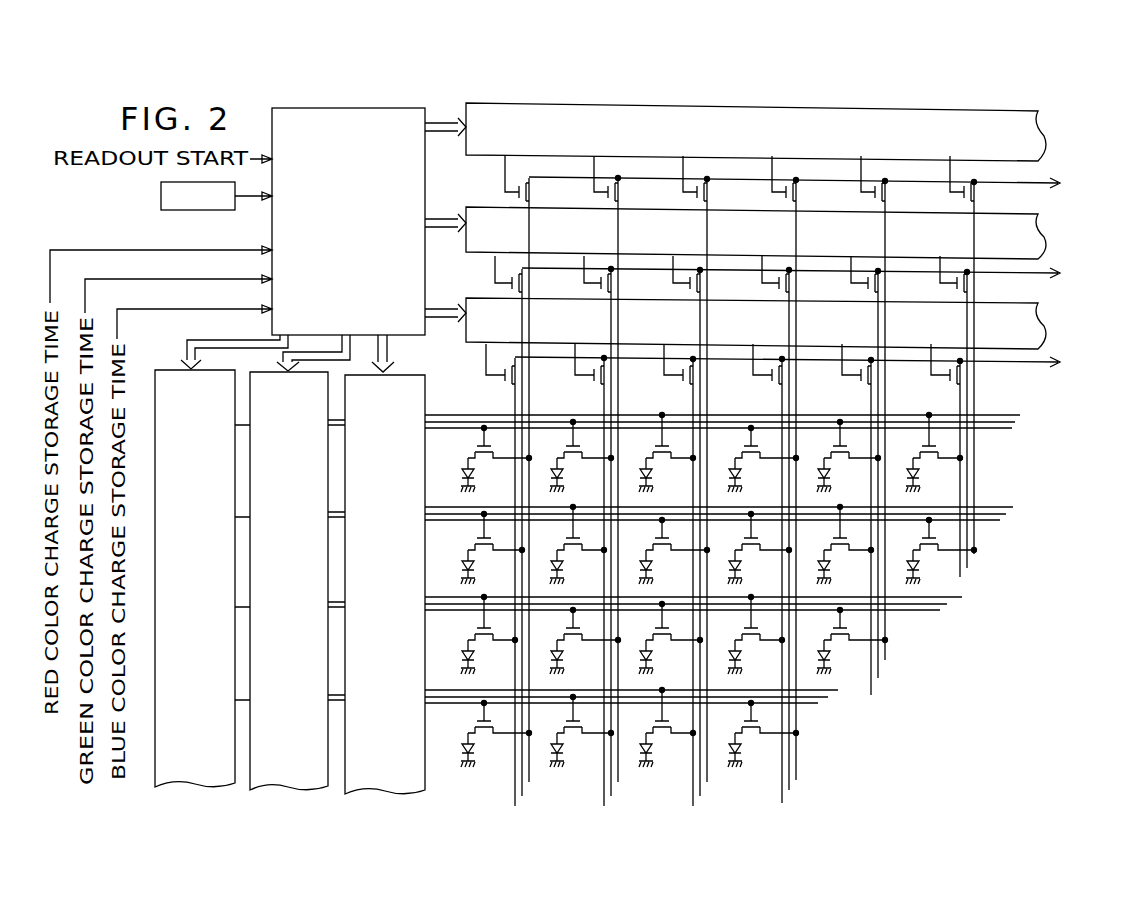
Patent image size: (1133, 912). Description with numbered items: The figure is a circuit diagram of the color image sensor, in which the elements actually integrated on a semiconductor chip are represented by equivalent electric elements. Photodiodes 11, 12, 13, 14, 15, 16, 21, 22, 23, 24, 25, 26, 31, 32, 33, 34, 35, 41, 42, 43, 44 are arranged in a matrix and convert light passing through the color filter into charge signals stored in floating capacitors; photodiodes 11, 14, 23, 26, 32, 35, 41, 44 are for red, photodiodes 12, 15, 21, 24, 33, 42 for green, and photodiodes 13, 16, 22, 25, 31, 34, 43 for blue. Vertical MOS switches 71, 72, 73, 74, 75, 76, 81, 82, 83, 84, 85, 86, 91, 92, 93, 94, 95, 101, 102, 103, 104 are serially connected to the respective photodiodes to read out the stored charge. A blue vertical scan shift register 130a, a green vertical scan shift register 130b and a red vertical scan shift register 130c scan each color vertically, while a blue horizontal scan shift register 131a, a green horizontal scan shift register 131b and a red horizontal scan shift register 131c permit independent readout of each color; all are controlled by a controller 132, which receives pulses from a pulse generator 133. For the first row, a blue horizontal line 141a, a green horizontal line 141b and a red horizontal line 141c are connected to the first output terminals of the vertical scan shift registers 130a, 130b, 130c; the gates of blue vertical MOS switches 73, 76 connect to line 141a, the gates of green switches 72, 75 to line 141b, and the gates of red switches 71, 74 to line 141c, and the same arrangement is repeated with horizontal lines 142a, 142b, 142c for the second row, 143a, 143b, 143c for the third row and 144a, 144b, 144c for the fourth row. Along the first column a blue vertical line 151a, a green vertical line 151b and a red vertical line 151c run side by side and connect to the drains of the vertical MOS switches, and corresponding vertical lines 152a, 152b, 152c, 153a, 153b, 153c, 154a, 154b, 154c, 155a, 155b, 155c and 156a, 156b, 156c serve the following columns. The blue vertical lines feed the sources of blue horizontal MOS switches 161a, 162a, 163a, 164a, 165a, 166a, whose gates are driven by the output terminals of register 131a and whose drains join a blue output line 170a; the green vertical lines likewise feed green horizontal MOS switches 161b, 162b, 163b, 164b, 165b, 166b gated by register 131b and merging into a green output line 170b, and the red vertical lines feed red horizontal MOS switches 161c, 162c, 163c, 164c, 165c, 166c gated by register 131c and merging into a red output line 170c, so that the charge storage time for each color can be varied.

The controller 132 is at (272, 225).
The pulse generator 133 is at (161, 194).
The blue vertical scan shift register 130a is at (391, 797).
The green vertical scan shift register 130b is at (296, 793).
The red vertical scan shift register 130c is at (196, 790).
The blue horizontal scan shift register 131a is at (1046, 318).
The green horizontal scan shift register 131b is at (1046, 228).
The red horizontal scan shift register 131c is at (1046, 128).
The blue horizontal line 141a is at (1020, 415).
The green horizontal line 141b is at (1015, 422).
The red horizontal line 141c is at (1012, 428).
The blue row select line (second row) 142a is at (1013, 507).
The green row select line (second row) 142b is at (1006, 514).
The red row select line (second row) 142c is at (1000, 520).
The blue row select line (third row) 143a is at (962, 597).
The green row select line (third row) 143b is at (947, 604).
The red row select line (third row) 143c is at (940, 610).
The blue row select line (fourth row) 144a is at (838, 690).
The green row select line (fourth row) 144b is at (828, 697).
The red row select line (fourth row) 144c is at (818, 703).
The blue vertical line 151a is at (515, 806).
The green vertical line 151b is at (522, 796).
The red vertical line 151c is at (529, 782).
The blue vertical line 152a is at (604, 806).
The green vertical line 152b is at (611, 796).
The red vertical line 152c is at (618, 782).
The blue vertical line 153a is at (693, 806).
The green vertical line 153b is at (700, 796).
The red vertical line 153c is at (707, 782).
The blue vertical line 154a is at (782, 803).
The green vertical line 154b is at (789, 790).
The red vertical line 154c is at (796, 779).
The blue vertical line 155a is at (873, 659).
The green vertical line 155b is at (879, 678).
The red vertical line 155c is at (871, 695).
The blue vertical line 156a is at (960, 577).
The green vertical line 156b is at (967, 568).
The red vertical line 156c is at (975, 553).
The blue horizontal MOS switch 161a is at (500, 377).
The blue horizontal MOS switch 162a is at (589, 377).
The blue horizontal MOS switch 163a is at (678, 377).
The blue horizontal MOS switch 164a is at (767, 377).
The blue horizontal MOS switch 165a is at (856, 377).
The blue horizontal MOS switch 166a is at (945, 377).
The green horizontal MOS switch 161b is at (497, 283).
The green horizontal MOS switch 162b is at (586, 283).
The green horizontal MOS switch 163b is at (675, 283).
The green horizontal MOS switch 164b is at (764, 283).
The green horizontal MOS switch 165b is at (853, 283).
The green horizontal MOS switch 166b is at (942, 283).
The red horizontal MOS switch 161c is at (504, 192).
The red horizontal MOS switch 162c is at (593, 192).
The red horizontal MOS switch 163c is at (682, 192).
The red horizontal MOS switch 164c is at (771, 192).
The red horizontal MOS switch 165c is at (860, 192).
The red horizontal MOS switch 166c is at (949, 192).
The blue output line 170a is at (1050, 361).
The green output line 170b is at (1050, 272).
The red output line 170c is at (1050, 182).
The photodiode 11 is at (472, 473).
The photodiode 12 is at (561, 473).
The photodiode 13 is at (650, 473).
The photodiode 14 is at (739, 473).
The photodiode 15 is at (828, 473).
The photodiode 16 is at (917, 473).
The photodiode 21 is at (472, 565).
The photodiode 22 is at (561, 565).
The photodiode 23 is at (650, 565).
The photodiode 24 is at (739, 565).
The photodiode 25 is at (828, 565).
The photodiode 26 is at (917, 565).
The photodiode 31 is at (472, 655).
The photodiode 32 is at (561, 655).
The photodiode 33 is at (650, 655).
The photodiode 34 is at (739, 655).
The photodiode 35 is at (828, 655).
The photodiode 41 is at (472, 748).
The photodiode 42 is at (561, 748).
The photodiode 43 is at (650, 748).
The photodiode 44 is at (739, 748).
The vertical MOS switch 71 is at (483, 445).
The vertical MOS switch 72 is at (572, 445).
The vertical MOS switch 73 is at (661, 445).
The vertical MOS switch 74 is at (750, 445).
The vertical MOS switch 75 is at (839, 445).
The vertical MOS switch 76 is at (928, 445).
The vertical MOS switch 81 is at (483, 537).
The vertical MOS switch 82 is at (572, 537).
The vertical MOS switch 83 is at (661, 537).
The vertical MOS switch 84 is at (750, 537).
The vertical MOS switch 85 is at (839, 537).
The vertical MOS switch 86 is at (928, 537).
The vertical MOS switch 91 is at (483, 627).
The vertical MOS switch 92 is at (572, 627).
The vertical MOS switch 93 is at (661, 627).
The vertical MOS switch 94 is at (750, 627).
The vertical MOS switch 95 is at (839, 627).
The vertical MOS switch 101 is at (483, 720).
The vertical MOS switch 102 is at (572, 720).
The vertical MOS switch 103 is at (661, 720).
The vertical MOS switch 104 is at (750, 720).